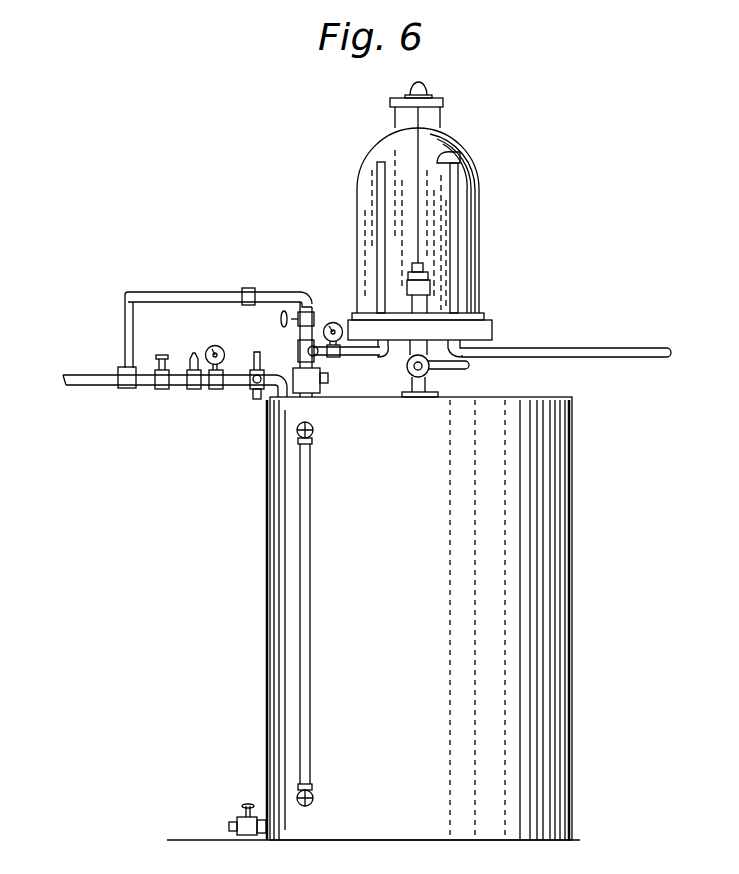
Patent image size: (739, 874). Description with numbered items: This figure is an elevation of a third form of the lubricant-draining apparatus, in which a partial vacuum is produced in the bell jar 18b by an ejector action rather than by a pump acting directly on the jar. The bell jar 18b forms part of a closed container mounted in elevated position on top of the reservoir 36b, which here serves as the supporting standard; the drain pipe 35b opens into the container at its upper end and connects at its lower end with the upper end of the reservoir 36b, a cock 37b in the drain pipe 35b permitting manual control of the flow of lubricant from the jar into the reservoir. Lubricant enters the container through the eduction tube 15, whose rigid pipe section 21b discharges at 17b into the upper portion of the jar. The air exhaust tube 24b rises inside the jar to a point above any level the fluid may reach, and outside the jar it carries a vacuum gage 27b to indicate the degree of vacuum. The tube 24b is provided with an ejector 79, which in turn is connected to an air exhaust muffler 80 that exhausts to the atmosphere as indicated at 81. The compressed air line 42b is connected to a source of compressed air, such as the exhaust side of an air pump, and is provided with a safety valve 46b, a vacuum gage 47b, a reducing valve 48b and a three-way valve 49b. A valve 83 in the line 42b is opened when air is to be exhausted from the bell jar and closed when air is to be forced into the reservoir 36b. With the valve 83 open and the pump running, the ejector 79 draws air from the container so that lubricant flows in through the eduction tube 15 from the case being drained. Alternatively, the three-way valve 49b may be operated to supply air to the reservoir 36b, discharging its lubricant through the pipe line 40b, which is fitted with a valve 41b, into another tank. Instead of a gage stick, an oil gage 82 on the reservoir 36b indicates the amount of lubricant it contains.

The eduction tube 15 is at (578, 347).
The discharge of the eduction tube 17b is at (440, 157).
The bell jar 18b is at (373, 150).
The rigid pipe section 21b is at (455, 245).
The air exhaust tube 24b is at (378, 210).
The vacuum gage 27b is at (334, 322).
The drain pipe 35b is at (428, 384).
The reservoir 36b is at (547, 584).
The cock 37b is at (410, 374).
The pipe line 40b is at (238, 822).
The valve 41b is at (248, 802).
The compressed air line 42b is at (70, 384).
The safety valve 46b is at (190, 389).
The vacuum gage 47b is at (215, 346).
The reducing valve 48b is at (157, 389).
The three-way valve 49b is at (252, 395).
The ejector 79 is at (316, 355).
The air exhaust muffler 80 is at (313, 390).
The exhaust to atmosphere 81 is at (328, 382).
The oil gage 82 is at (303, 605).
The valve 83 is at (307, 298).